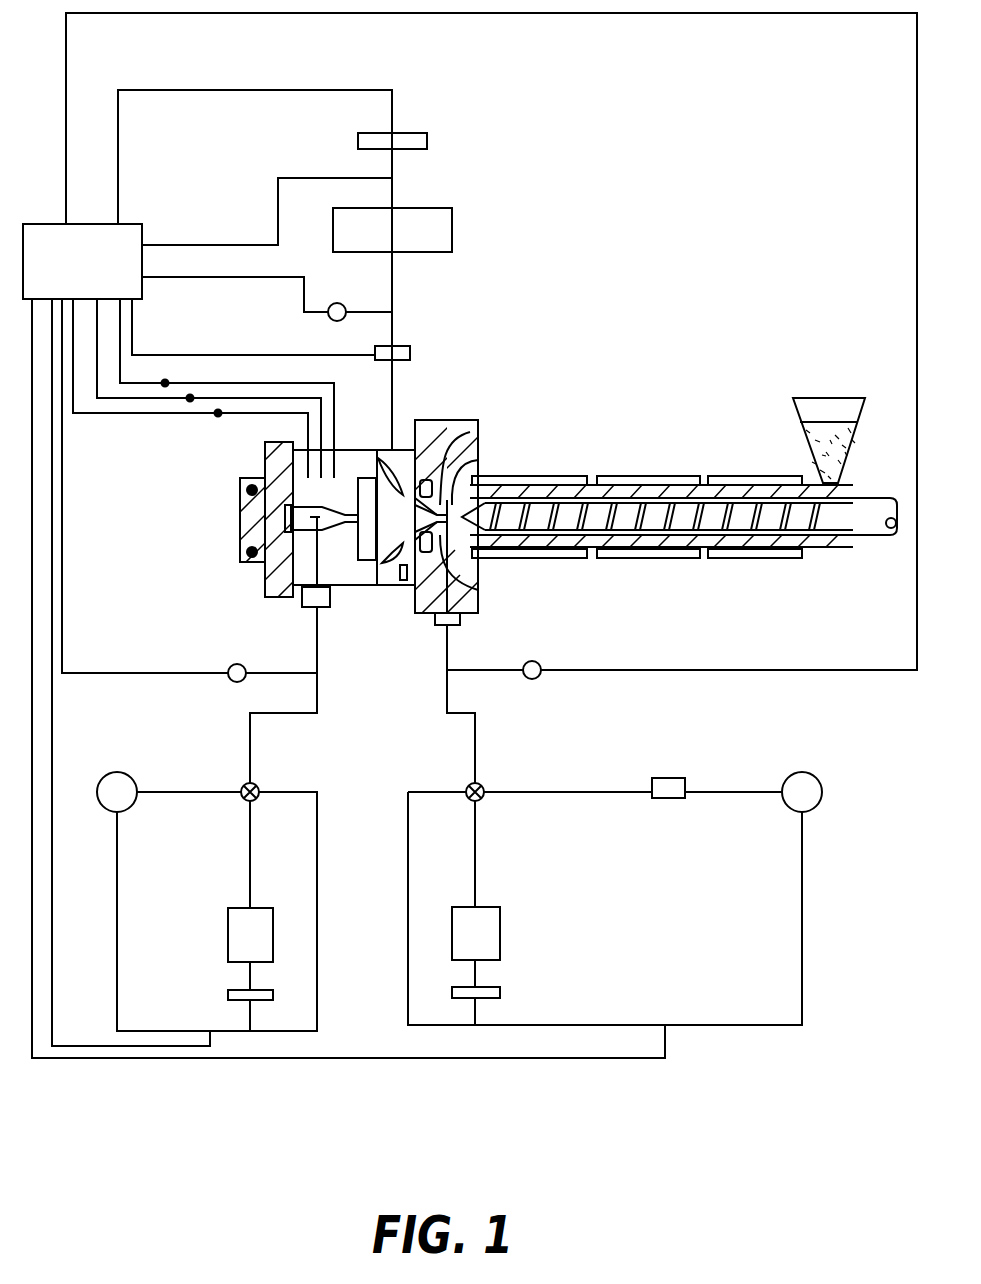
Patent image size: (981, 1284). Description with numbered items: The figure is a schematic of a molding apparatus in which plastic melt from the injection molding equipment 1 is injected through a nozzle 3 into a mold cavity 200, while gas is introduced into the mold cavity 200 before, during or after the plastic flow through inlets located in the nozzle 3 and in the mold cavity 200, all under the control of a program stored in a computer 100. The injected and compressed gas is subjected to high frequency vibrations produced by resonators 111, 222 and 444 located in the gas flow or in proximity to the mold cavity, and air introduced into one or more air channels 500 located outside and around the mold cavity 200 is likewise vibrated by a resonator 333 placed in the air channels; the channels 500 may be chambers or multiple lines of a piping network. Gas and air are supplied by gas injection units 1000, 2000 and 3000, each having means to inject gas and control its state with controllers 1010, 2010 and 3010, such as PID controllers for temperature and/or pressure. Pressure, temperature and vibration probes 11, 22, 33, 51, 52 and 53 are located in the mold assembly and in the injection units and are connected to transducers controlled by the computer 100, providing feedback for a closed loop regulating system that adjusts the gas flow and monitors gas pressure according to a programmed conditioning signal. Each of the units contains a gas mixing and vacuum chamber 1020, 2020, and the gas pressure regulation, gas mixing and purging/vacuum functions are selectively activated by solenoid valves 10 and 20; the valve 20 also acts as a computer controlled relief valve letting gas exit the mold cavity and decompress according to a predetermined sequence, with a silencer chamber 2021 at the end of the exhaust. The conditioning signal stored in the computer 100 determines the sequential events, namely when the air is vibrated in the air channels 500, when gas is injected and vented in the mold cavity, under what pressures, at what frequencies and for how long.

The injection molding equipment 1 is at (645, 560).
The nozzle 3 is at (470, 475).
The solenoid valve 10 is at (256, 784).
The probe 11 is at (232, 665).
The solenoid valve 20 is at (480, 784).
The probe 22 is at (538, 663).
The probe 33 is at (338, 304).
The probe 51 is at (165, 386).
The probe 52 is at (190, 402).
The probe 53 is at (218, 416).
The computer 100 is at (82, 261).
The resonator 111 is at (331, 595).
The mold cavity 200 is at (362, 501).
The resonator 222 is at (462, 626).
The resonator 333 is at (404, 346).
The resonator 444 is at (402, 582).
The air channels 500 is at (393, 548).
The gas injection unit 1000 is at (240, 928).
The controller 1010 is at (240, 998).
The gas mixing and vacuum chamber 1020 is at (123, 780).
The gas injection unit 2000 is at (493, 920).
The controller 2010 is at (493, 996).
The gas mixing and vacuum chamber 2020 is at (802, 775).
The silencer chamber 2021 is at (676, 778).
The gas injection unit 3000 is at (392, 230).
The controller 3010 is at (378, 140).